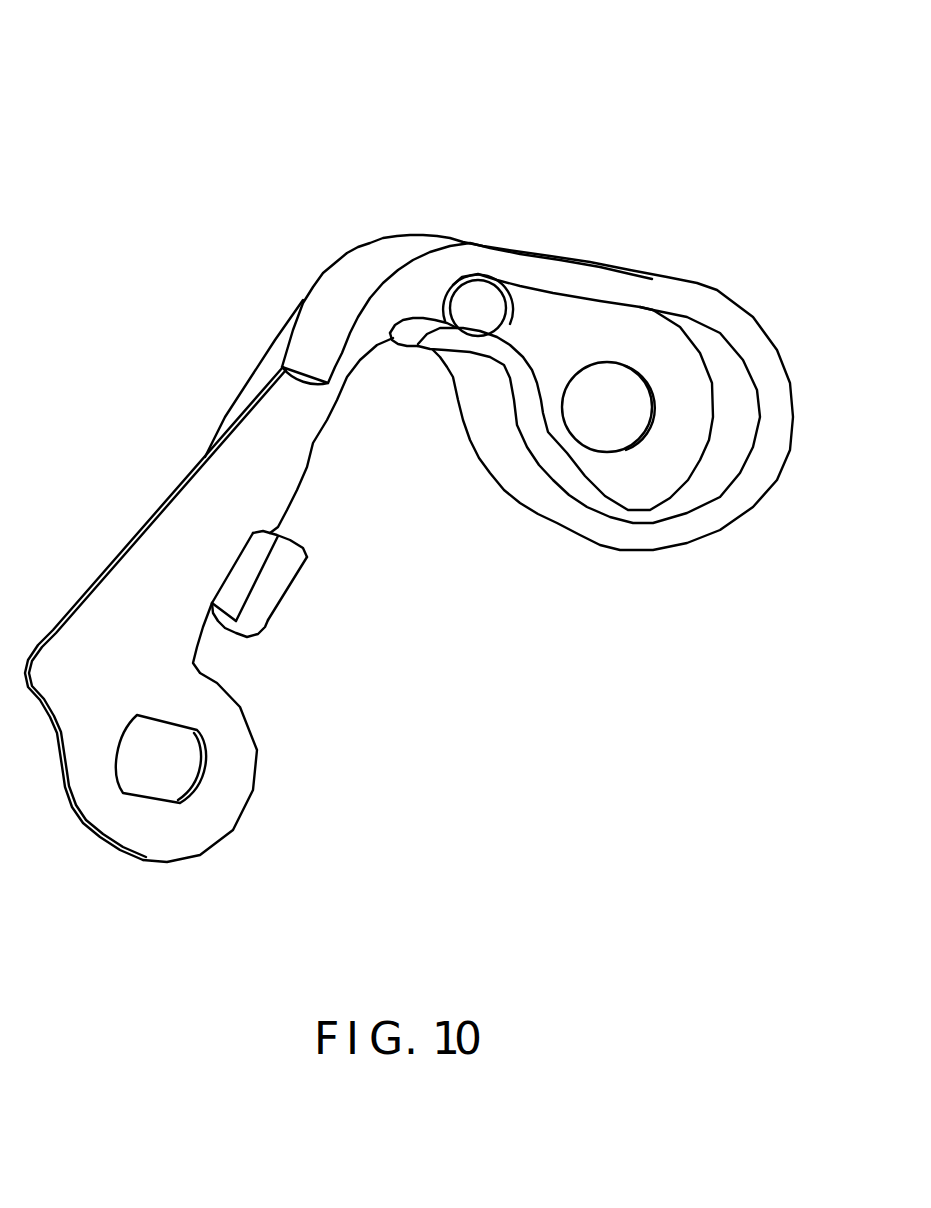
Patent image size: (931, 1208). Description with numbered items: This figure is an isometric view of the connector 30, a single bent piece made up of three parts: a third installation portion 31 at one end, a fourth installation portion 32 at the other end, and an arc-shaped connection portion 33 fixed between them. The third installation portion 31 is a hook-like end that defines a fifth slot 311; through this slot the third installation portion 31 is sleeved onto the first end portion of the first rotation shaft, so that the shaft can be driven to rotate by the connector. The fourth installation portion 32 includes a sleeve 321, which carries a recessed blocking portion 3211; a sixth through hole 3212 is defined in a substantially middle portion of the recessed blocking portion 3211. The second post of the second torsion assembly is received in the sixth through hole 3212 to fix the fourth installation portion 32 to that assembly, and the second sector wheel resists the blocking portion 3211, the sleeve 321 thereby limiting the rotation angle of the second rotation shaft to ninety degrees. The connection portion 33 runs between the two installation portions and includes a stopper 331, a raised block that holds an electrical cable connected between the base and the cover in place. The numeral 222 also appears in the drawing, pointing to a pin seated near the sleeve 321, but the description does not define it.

The connector 30 is at (330, 123).
The third installation portion 31 is at (60, 777).
The fifth slot 311 is at (148, 782).
The fourth installation portion 32 is at (540, 252).
The sleeve 321 is at (735, 415).
The recessed blocking portion 3211 is at (630, 490).
The sixth through hole 3212 is at (598, 415).
The connection portion 33 is at (258, 373).
The stopper 331 is at (263, 600).
The pin 222 is at (470, 310).